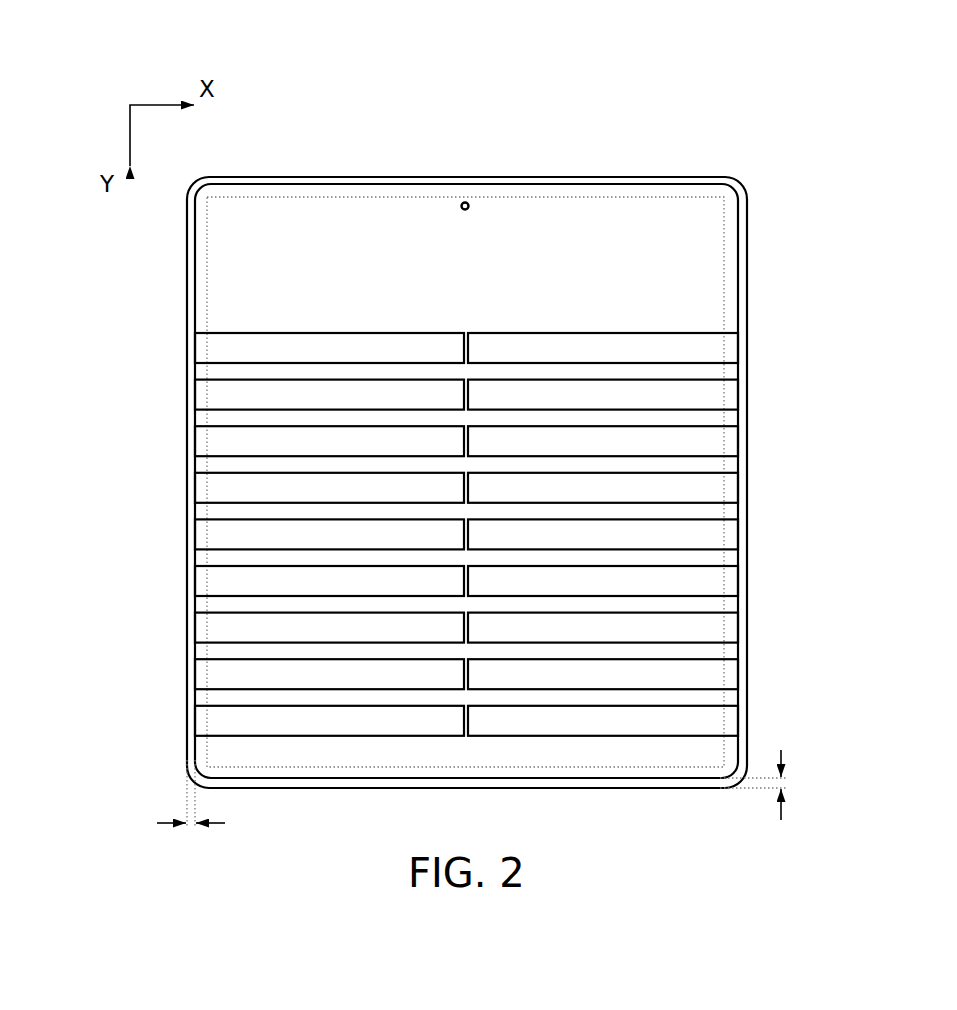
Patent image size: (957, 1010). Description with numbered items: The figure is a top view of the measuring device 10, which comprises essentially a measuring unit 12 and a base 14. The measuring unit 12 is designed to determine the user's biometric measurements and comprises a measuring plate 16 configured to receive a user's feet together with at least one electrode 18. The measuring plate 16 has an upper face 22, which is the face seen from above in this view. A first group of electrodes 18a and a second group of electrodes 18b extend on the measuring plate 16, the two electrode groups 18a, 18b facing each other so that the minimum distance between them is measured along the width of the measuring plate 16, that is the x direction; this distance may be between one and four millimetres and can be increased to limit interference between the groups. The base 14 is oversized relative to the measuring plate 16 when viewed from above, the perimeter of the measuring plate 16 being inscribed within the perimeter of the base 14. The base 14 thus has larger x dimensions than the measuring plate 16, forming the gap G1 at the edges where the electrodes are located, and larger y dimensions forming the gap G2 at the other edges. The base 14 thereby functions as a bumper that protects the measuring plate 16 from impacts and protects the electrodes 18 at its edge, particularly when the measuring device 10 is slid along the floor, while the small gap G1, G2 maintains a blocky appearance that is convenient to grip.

The measuring device 10 is at (366, 118).
The measuring unit 12 is at (531, 230).
The base 14 is at (750, 599).
The measuring plate 16 is at (648, 218).
The electrode 18 is at (461, 534).
The first group of electrodes 18a is at (263, 542).
The second group of electrodes 18b is at (661, 542).
The upper face 22 is at (695, 230).
The gap G1 is at (191, 809).
The gap G2 is at (771, 785).